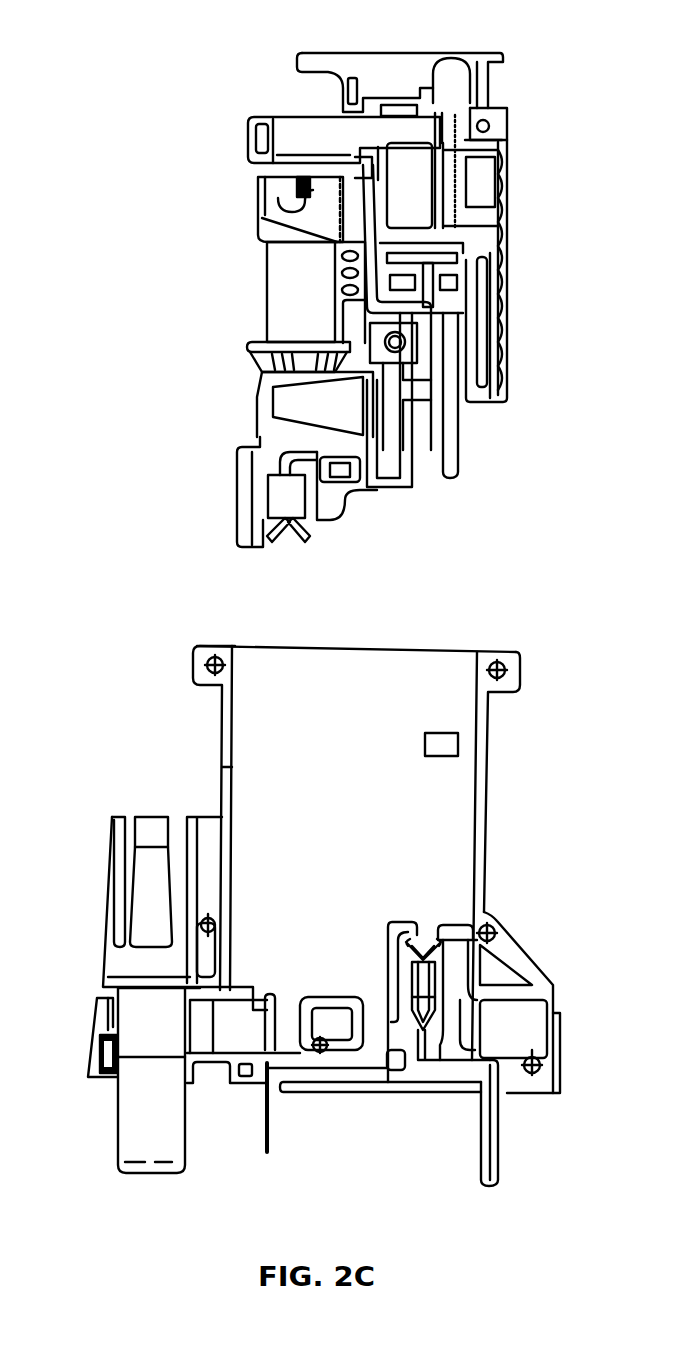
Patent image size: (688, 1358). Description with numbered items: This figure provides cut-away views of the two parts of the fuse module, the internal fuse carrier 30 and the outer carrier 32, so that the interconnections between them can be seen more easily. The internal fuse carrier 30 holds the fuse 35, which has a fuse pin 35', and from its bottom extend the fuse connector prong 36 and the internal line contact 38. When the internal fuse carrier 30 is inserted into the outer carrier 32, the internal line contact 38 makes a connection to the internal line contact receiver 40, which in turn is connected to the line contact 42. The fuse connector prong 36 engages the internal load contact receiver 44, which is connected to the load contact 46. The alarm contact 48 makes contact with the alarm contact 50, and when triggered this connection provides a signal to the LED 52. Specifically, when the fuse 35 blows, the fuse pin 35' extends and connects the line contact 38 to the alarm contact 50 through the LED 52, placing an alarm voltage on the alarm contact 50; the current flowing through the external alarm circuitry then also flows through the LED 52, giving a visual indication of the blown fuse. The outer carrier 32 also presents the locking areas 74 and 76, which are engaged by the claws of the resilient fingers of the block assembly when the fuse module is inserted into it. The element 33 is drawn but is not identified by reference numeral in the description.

The internal fuse carrier 30 is at (508, 106).
The outer carrier 32 is at (490, 808).
The terminal block 33 is at (100, 820).
The fuse 35 is at (276, 292).
The fuse pin 35' is at (260, 218).
The fuse connector prong 36 is at (288, 525).
The internal line contact 38 is at (458, 470).
The internal line contact receiver 40 is at (421, 938).
The line contact 42 is at (500, 1177).
The internal load contact receiver 44 is at (272, 993).
The load contact 46 is at (117, 1170).
The alarm contact 48 is at (270, 1150).
The alarm contact 50 is at (393, 490).
The LED 52 is at (447, 68).
The locking area 74 is at (527, 1033).
The locking area 76 is at (110, 1012).